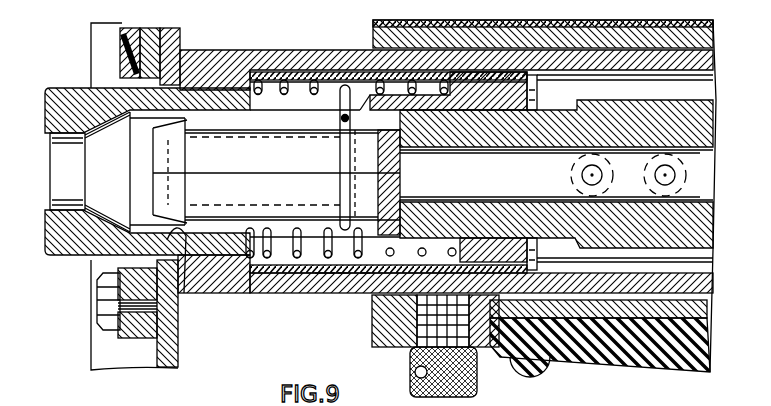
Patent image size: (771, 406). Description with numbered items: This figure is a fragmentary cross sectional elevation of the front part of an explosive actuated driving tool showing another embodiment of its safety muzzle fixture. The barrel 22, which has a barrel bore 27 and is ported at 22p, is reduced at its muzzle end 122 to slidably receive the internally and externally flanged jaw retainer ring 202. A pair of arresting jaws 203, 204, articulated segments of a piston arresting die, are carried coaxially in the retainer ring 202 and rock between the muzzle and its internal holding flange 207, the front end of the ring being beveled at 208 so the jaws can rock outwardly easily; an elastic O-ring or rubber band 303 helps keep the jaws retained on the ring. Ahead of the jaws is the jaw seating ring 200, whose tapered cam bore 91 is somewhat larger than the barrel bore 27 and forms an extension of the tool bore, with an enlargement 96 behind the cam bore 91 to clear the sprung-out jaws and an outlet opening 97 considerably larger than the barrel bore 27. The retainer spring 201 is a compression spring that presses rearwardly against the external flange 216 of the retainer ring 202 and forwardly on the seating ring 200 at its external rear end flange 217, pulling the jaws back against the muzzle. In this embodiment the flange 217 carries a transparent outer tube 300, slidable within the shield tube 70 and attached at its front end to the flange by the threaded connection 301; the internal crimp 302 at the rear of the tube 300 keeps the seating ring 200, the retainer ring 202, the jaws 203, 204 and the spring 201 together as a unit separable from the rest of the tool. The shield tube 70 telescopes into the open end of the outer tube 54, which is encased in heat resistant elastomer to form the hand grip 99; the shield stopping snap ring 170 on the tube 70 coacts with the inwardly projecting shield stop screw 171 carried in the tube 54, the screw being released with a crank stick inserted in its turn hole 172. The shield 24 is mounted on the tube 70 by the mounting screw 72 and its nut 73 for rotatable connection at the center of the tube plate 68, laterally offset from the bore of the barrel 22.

The shield 24 is at (91, 30).
The tube plate 68 is at (172, 30).
The jaw seating ring 200 is at (79, 257).
The outlet opening 97 is at (68, 168).
The tapered cam bore 91 is at (93, 178).
The enlargement 96 is at (186, 294).
The arresting jaw 203 is at (292, 175).
The arresting jaw 204 is at (265, 190).
The elastic O-ring 303 is at (340, 197).
The outer tube 300 is at (281, 72).
The beveled front end 208 is at (367, 80).
The external rear end flange 217 is at (217, 90).
The external flange 216 is at (503, 97).
The reduced end of barrel 122 is at (537, 112).
The internal crimp 302 is at (572, 97).
The outer tube 54 is at (715, 41).
The hand grip 99 is at (705, 22).
The shield tube 70 is at (295, 60).
The barrel 22 is at (700, 130).
The barrel bore 27 is at (703, 156).
The port 22p is at (672, 182).
The shield stopping snap ring 170 is at (550, 361).
The shield stop screw 171 is at (478, 382).
The turn hole 172 is at (415, 373).
The nut 73 is at (100, 323).
The mounting screw 72 is at (172, 322).
The threaded connection 301 is at (235, 293).
The internal holding flange 207 is at (325, 293).
The retainer spring 201 is at (342, 293).
The jaw retainer ring 202 is at (365, 293).